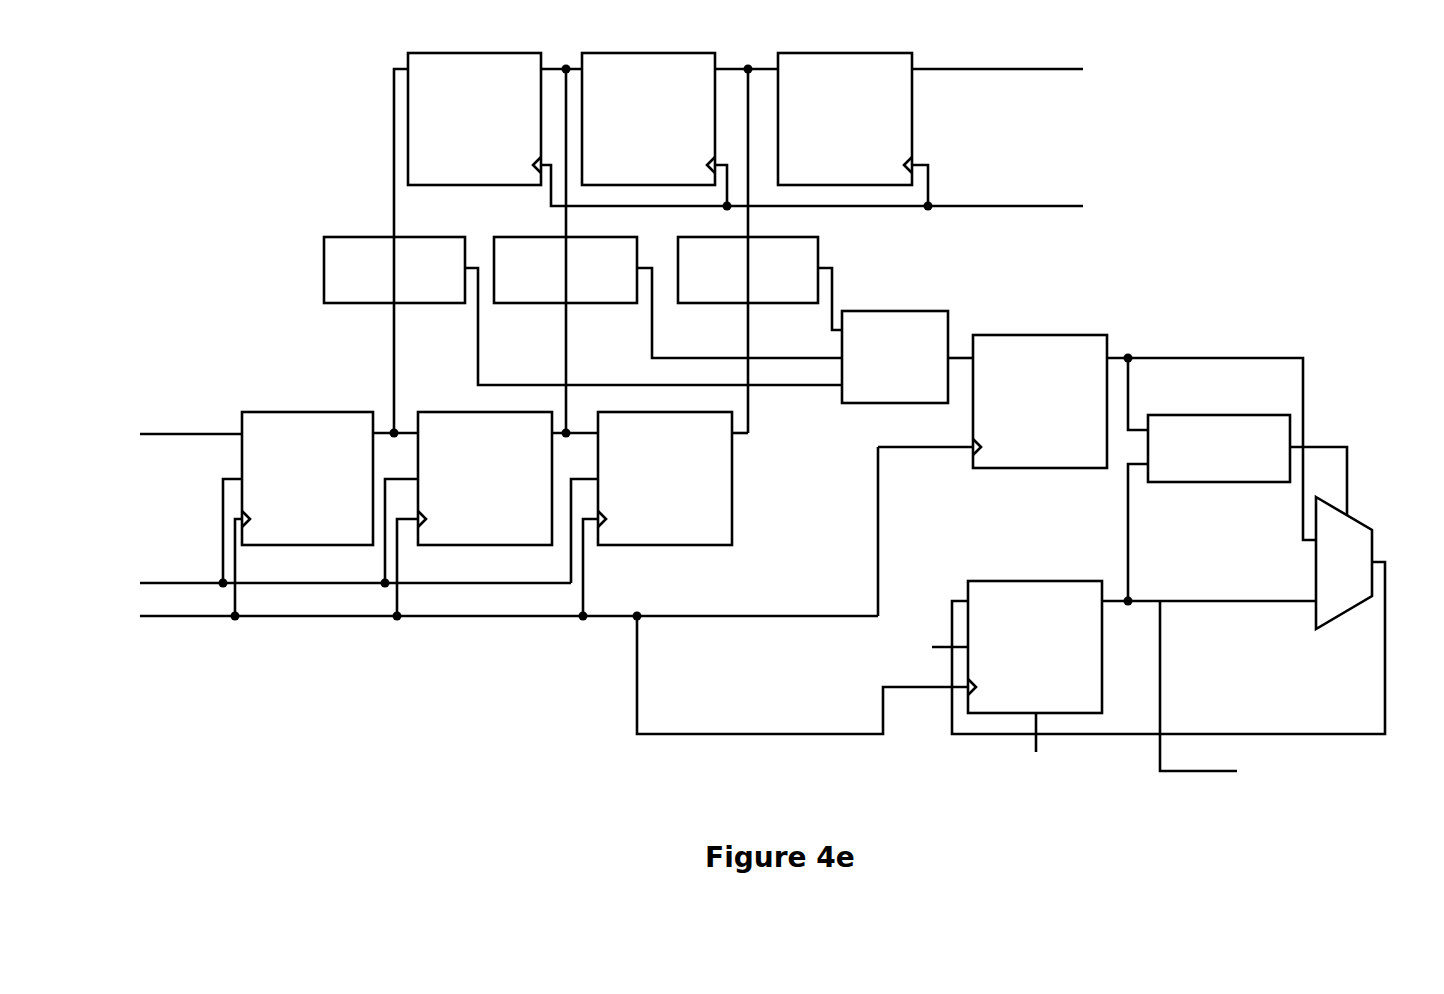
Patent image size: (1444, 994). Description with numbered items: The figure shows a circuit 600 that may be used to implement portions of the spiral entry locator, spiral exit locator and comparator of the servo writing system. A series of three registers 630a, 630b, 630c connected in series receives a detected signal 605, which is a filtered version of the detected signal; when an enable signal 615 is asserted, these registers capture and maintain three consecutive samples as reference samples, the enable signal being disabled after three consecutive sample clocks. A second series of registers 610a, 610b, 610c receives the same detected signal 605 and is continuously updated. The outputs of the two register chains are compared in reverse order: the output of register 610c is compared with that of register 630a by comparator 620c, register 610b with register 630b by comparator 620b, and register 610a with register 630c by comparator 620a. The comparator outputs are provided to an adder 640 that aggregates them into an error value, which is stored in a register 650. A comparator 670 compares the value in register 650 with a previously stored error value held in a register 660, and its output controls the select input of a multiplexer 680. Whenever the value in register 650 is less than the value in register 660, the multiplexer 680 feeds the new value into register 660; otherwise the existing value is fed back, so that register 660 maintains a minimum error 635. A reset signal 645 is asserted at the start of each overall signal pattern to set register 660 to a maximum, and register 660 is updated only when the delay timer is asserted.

The circuit 600 is at (734, 435).
The detected signal 605 is at (110, 403).
The register 610a is at (868, 143).
The register 610b is at (672, 143).
The register 610c is at (497, 143).
The enable signal 615 is at (112, 553).
The comparator 620a is at (772, 294).
The comparator 620b is at (588, 294).
The comparator 620c is at (416, 294).
The register 630a is at (330, 501).
The register 630b is at (507, 501).
The register 630c is at (685, 501).
The minimum error 635 is at (1314, 779).
The adder 640 is at (912, 382).
The reset signal 645 is at (866, 668).
The register 650 is at (1056, 411).
The register 660 is at (1050, 657).
The comparator 670 is at (1236, 472).
The multiplexer 680 is at (1360, 580).